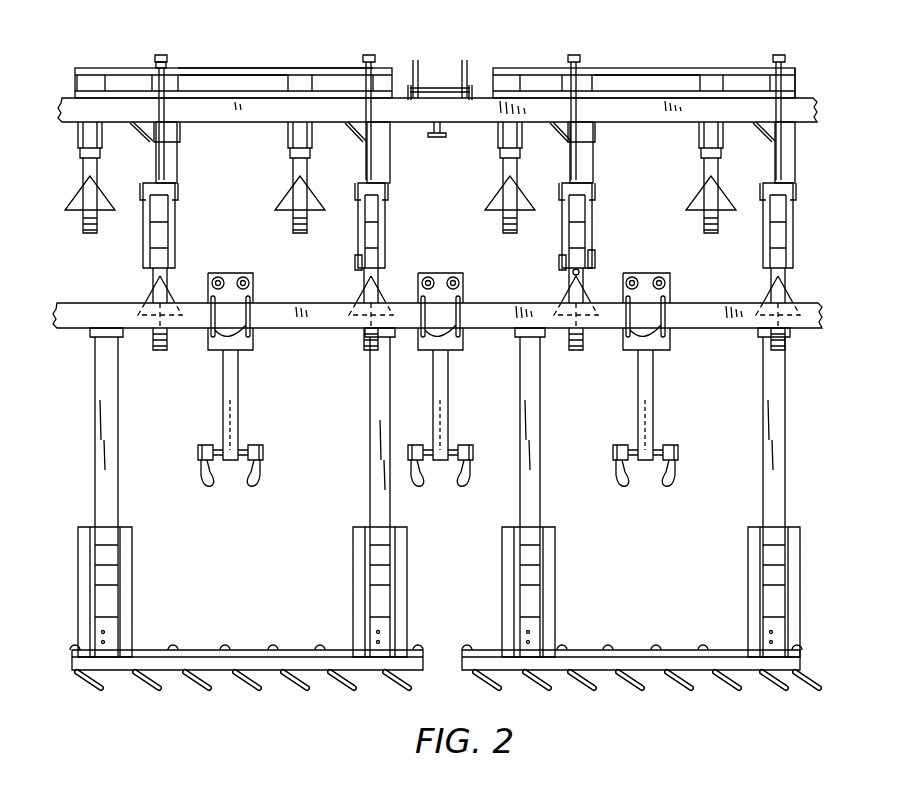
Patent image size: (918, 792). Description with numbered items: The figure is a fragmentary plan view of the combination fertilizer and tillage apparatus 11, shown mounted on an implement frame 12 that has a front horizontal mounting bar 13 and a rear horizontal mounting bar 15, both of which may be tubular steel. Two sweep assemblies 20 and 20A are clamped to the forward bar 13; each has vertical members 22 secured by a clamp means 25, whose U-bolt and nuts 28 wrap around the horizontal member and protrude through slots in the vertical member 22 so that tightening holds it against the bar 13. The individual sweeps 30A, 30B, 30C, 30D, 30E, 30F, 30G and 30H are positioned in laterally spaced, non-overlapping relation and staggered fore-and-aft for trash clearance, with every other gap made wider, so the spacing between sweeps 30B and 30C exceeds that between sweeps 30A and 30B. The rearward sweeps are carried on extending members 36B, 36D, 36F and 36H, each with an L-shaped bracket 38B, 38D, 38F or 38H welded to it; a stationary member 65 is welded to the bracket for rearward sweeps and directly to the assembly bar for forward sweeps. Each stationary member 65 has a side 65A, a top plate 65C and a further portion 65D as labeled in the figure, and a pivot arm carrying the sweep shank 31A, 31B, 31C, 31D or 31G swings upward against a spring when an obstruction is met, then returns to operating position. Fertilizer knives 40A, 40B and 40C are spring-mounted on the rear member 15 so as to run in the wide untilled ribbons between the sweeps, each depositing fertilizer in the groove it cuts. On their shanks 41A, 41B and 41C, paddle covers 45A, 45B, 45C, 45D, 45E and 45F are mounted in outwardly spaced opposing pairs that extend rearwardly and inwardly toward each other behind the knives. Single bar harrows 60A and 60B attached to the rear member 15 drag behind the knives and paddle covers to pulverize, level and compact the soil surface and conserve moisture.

The combination fertilizer and tillage apparatus 11 is at (276, 50).
The implement frame 12 is at (402, 85).
The front horizontal mounting bar 13 is at (805, 97).
The rear horizontal mounting bar 15 is at (812, 303).
The sweep assembly 20 is at (306, 58).
The sweep assembly 20A is at (640, 58).
The vertical member 22 is at (150, 75).
The clamp means 25 is at (157, 55).
The nuts 28 is at (160, 66).
The sweep 30A is at (79, 192).
The sweep 30B is at (132, 322).
The sweep 30C is at (291, 184).
The sweep 30D is at (349, 318).
The sweep 30E is at (496, 185).
The sweep 30F is at (554, 322).
The sweep 30G is at (707, 187).
The sweep 30H is at (773, 298).
The shank 31A is at (97, 227).
The shank 31B is at (184, 362).
The shank 31C is at (309, 224).
The shank 31D is at (358, 338).
The shank 31G is at (718, 225).
The extending member 36B is at (182, 152).
The extending member 36D is at (392, 152).
The extending member 36F is at (595, 153).
The extending member 36H is at (797, 167).
The bracket 38B is at (143, 192).
The bracket 38D is at (357, 192).
The bracket 38F is at (562, 192).
The bracket 38H is at (763, 194).
The fertilizer knife 40A is at (237, 420).
The fertilizer knife 40B is at (448, 410).
The fertilizer knife 40C is at (654, 420).
The fertilizer knife shank 41A is at (225, 405).
The fertilizer knife shank 41B is at (461, 405).
The fertilizer knife shank 41C is at (636, 405).
The paddle cover 45A is at (202, 470).
The paddle cover 45B is at (252, 484).
The paddle cover 45C is at (415, 483).
The paddle cover 45D is at (453, 486).
The paddle cover 45E is at (613, 480).
The paddle cover 45F is at (675, 488).
The single bar harrow 60A is at (119, 504).
The single bar harrow 60B is at (628, 650).
The stationary member 65 is at (356, 262).
The stationary member side 65A is at (558, 245).
The top plate 65C is at (582, 274).
The pivot pin 65D is at (590, 260).